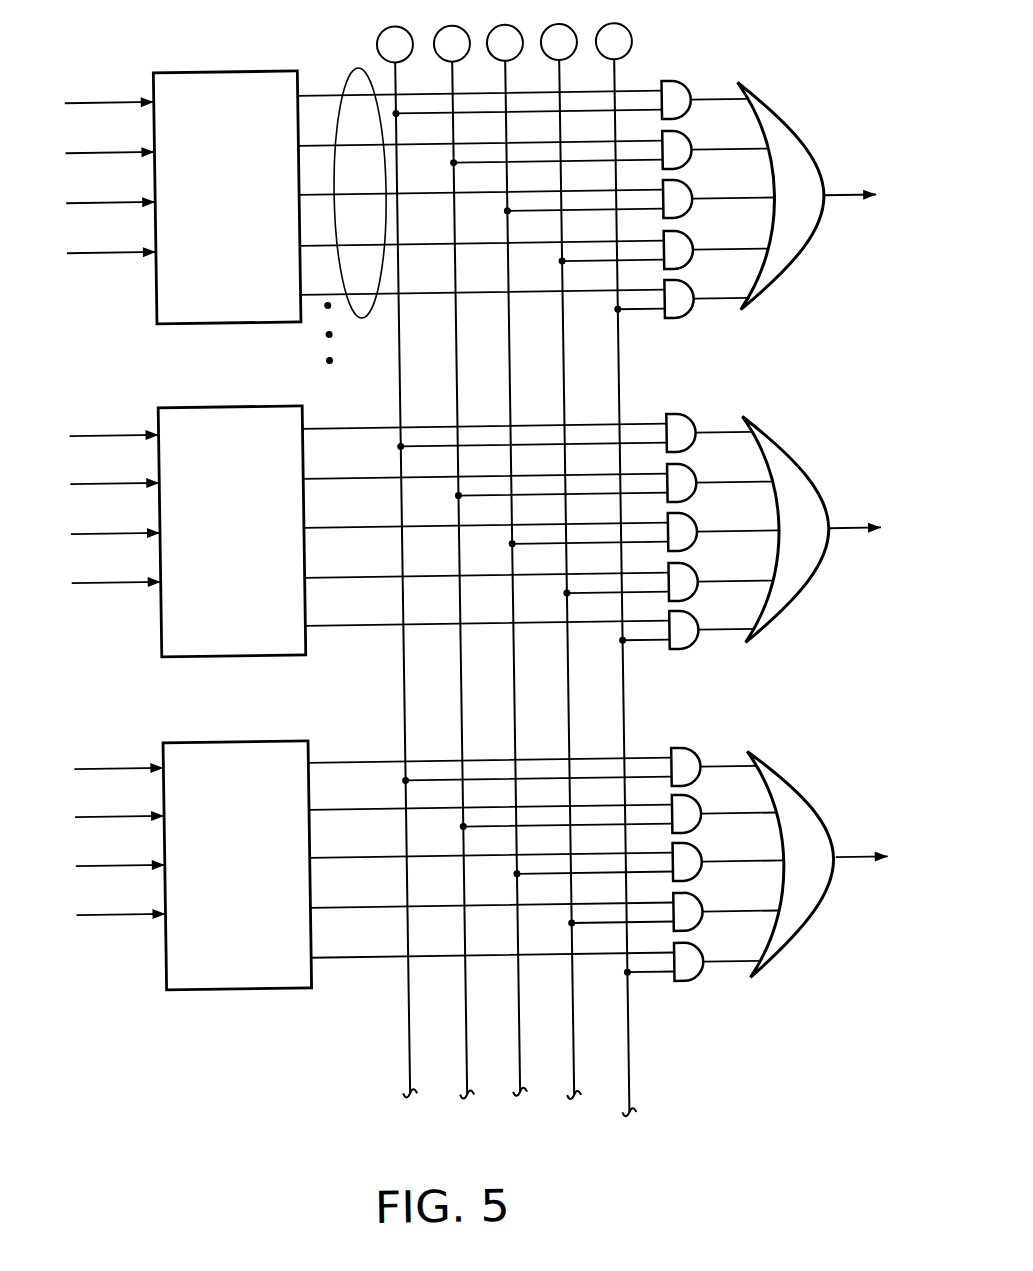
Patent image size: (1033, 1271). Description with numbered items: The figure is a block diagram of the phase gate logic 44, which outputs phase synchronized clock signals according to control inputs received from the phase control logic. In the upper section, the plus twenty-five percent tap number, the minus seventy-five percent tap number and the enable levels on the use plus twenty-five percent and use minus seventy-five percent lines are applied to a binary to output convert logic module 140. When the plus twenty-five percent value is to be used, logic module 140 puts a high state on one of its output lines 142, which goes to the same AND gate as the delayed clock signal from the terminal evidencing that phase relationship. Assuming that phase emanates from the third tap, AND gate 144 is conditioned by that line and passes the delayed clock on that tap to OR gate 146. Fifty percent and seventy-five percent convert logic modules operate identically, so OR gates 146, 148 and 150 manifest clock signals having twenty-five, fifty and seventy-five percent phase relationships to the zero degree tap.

The phase gate logic 44 is at (183, 1057).
The binary to output convert logic module 140 is at (247, 68).
The output lines 142 is at (362, 66).
The AND gate 144 is at (688, 184).
The OR gate 146 is at (784, 114).
The OR gate 148 is at (787, 449).
The OR gate 150 is at (791, 779).